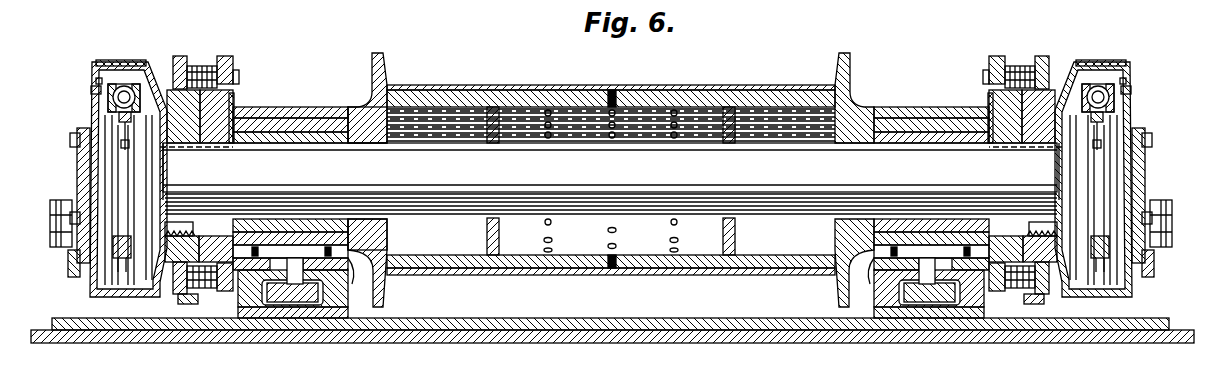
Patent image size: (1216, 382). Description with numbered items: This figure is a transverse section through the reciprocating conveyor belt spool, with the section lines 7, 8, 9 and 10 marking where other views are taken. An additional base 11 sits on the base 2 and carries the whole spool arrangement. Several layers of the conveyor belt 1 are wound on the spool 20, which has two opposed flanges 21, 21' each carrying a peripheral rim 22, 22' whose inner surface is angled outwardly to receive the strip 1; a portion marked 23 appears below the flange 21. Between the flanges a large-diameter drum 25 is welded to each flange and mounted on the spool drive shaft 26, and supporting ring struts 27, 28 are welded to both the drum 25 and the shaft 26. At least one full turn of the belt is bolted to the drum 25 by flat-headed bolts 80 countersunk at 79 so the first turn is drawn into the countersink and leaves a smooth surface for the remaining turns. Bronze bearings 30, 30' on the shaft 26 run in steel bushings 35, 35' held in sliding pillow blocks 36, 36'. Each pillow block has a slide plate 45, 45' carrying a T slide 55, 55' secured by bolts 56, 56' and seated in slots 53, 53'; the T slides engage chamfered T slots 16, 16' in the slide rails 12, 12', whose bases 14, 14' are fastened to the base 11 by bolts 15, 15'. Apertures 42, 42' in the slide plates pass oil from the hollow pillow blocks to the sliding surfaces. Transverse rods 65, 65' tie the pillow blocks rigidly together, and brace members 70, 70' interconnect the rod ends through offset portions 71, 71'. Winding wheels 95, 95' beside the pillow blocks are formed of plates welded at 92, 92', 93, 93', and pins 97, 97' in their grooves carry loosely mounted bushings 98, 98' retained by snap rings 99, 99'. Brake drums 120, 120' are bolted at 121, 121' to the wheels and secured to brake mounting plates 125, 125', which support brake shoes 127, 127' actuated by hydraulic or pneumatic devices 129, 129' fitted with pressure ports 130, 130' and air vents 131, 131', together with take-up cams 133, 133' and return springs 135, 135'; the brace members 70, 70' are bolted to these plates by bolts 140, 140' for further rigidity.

The conveyor belt 1 is at (728, 85).
The base 2 is at (1130, 343).
The section line 7 is at (167, 355).
The section line 8 is at (290, 360).
The section line 9 is at (148, 310).
The section line 10 is at (590, 70).
The additional base 11 is at (1160, 318).
The slide rail 12 is at (203, 290).
The slide rail base 14 is at (306, 335).
The bolt 15 is at (273, 315).
The T-shaped slot 16 is at (281, 316).
The spool 20 is at (362, 100).
The flange 21 is at (384, 234).
The peripheral rim 22 is at (379, 96).
The lower flange 23 is at (386, 296).
The drum 25 is at (470, 85).
The spool drive shaft 26 is at (592, 185).
The supporting ring strut 27 is at (500, 234).
The supporting ring strut 28 is at (723, 234).
The bronze bearing 30 is at (290, 151).
The bearing surface 35 is at (290, 108).
The sliding pillow block 36 is at (290, 91).
The aperture 42 is at (290, 203).
The slide plate 45 is at (359, 273).
The slot 53 is at (290, 216).
The T slide 55 is at (290, 308).
The bolt 56 is at (290, 210).
The transverse rod 65 is at (54, 211).
The brace member 70 is at (77, 186).
The offset portion 71 is at (59, 266).
The countersink 79 is at (605, 265).
The bolt 80 is at (616, 247).
The weld point 92 is at (210, 61).
The weld point 93 is at (200, 218).
The winding wheel 95 is at (246, 115).
The pin 97 is at (245, 67).
The bushing 98 is at (196, 92).
The retaining ring 99 is at (178, 62).
The brake drum 120 is at (128, 167).
The bolt 121 is at (181, 207).
The brake mounting plate 125 is at (106, 50).
The brake shoe 127 is at (129, 238).
The hydraulic or pneumatic device 129 is at (124, 62).
The pressure port 130 is at (75, 91).
The air vent 131 is at (79, 74).
The take-up cam 133 is at (153, 142).
The return spring 135 is at (132, 150).
The bolt 140 is at (57, 175).
The peripheral rim 22' is at (860, 98).
The flange 21' is at (841, 263).
The slide plate 45' is at (844, 275).
The sliding pillow block 36' is at (931, 97).
The bearing surface 35' is at (931, 106).
The bronze bearing 30' is at (931, 151).
The aperture 42' is at (931, 225).
The bolt 56' is at (931, 211).
The slot 53' is at (931, 218).
The T slide 55' is at (931, 310).
The T-shaped slot 16' is at (902, 316).
The bolt 15' is at (920, 310).
The slide rail base 14' is at (921, 335).
The slide rail 12' is at (931, 286).
The weld point 93' is at (1023, 220).
The bolt 121' is at (1043, 207).
The bushing 98' is at (1025, 128).
The retaining ring 99' is at (1012, 63).
The weld point 92' is at (1000, 79).
The pin 97' is at (1011, 57).
The winding wheel 95' is at (1031, 92).
The brake drum 120' is at (1093, 169).
The brake mounting plate 125' is at (1124, 68).
The hydraulic or pneumatic device 129' is at (1098, 66).
The pressure port 130' is at (1126, 90).
The air vent 131' is at (1123, 81).
The take-up cam 133' is at (1089, 139).
The return spring 135' is at (1097, 136).
The brake shoe 127' is at (1092, 270).
The brace member 70' is at (1150, 185).
The bolt 140' is at (1113, 178).
The transverse rod 65' is at (1171, 221).
The offset portion 71' is at (1164, 263).